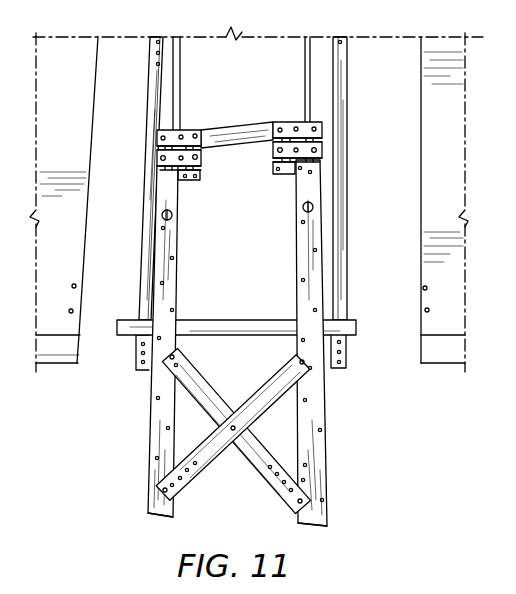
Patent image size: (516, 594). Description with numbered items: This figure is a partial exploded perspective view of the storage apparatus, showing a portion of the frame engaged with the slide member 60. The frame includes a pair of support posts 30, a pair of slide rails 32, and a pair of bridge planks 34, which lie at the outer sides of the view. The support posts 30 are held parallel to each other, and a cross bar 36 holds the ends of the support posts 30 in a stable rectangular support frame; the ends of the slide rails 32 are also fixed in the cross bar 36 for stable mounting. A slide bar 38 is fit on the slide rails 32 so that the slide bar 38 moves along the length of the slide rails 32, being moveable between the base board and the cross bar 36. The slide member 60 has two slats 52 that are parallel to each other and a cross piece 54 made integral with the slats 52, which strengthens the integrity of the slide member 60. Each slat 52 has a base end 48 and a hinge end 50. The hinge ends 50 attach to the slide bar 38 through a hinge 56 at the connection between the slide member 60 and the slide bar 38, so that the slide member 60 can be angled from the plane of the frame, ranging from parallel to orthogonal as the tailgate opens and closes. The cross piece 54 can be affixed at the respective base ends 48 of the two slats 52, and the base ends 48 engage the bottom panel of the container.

The support post 30 is at (150, 225).
The slide rail 32 is at (182, 47).
The bridge plank 34 is at (80, 268).
The cross bar 36 is at (218, 335).
The slide bar 38 is at (214, 144).
The base end 48 is at (155, 515).
The hinge end 50 is at (157, 163).
The slat 52 is at (175, 248).
The cross piece 54 is at (198, 474).
The hinge 56 is at (157, 141).
The slide member 60 is at (152, 425).